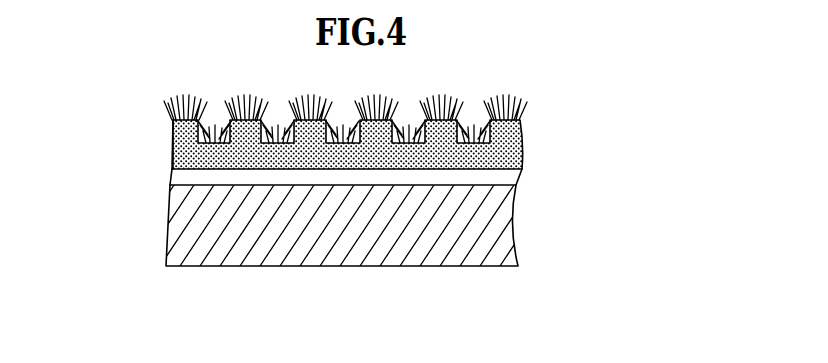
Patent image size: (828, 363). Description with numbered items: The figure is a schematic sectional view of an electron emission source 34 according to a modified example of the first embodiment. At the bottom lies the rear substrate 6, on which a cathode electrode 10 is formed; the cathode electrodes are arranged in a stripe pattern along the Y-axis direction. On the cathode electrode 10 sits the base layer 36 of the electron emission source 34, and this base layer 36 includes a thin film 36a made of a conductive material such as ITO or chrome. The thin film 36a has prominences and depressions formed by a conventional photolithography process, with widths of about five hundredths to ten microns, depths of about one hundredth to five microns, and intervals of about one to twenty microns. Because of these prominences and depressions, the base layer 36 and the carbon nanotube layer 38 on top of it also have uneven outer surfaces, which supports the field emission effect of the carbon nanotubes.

The rear substrate 6 is at (290, 250).
The cathode electrode 10 is at (380, 178).
The electron emission source 34 is at (578, 98).
The base layer 36 is at (522, 150).
The thin film 36a is at (173, 150).
The carbon nanotube layer 38 is at (506, 113).